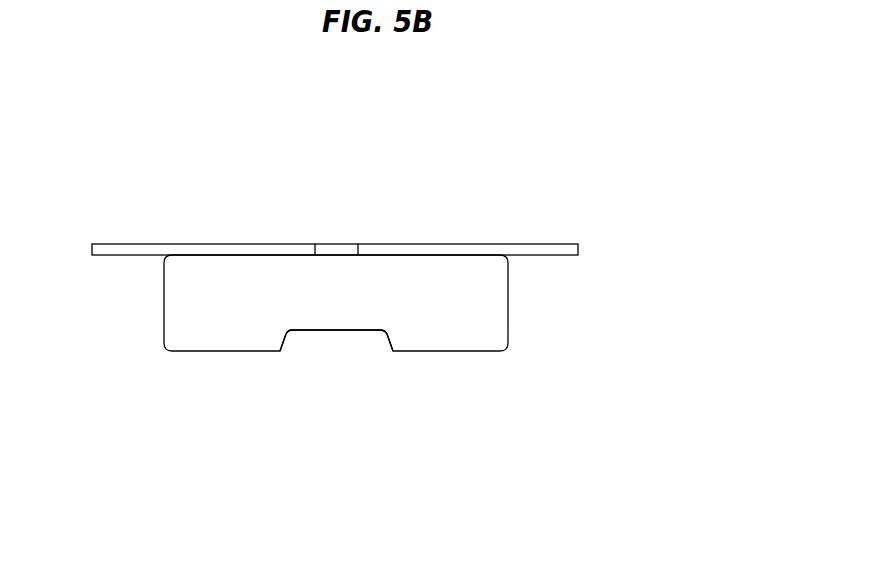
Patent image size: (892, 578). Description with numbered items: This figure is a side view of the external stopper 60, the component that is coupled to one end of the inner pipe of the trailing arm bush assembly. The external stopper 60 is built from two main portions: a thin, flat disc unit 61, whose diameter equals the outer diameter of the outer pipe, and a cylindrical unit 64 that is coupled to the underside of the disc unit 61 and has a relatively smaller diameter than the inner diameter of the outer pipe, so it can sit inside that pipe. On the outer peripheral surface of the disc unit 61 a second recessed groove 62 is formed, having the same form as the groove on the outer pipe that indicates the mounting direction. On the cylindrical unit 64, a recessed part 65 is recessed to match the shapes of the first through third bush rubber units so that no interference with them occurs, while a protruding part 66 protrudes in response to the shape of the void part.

The external stopper 60 is at (512, 124).
The disc unit 61 is at (542, 250).
The second recessed groove 62 is at (337, 248).
The cylindrical unit 64 is at (522, 300).
The recessed part 65 is at (342, 341).
The protruding part 66 is at (445, 313).